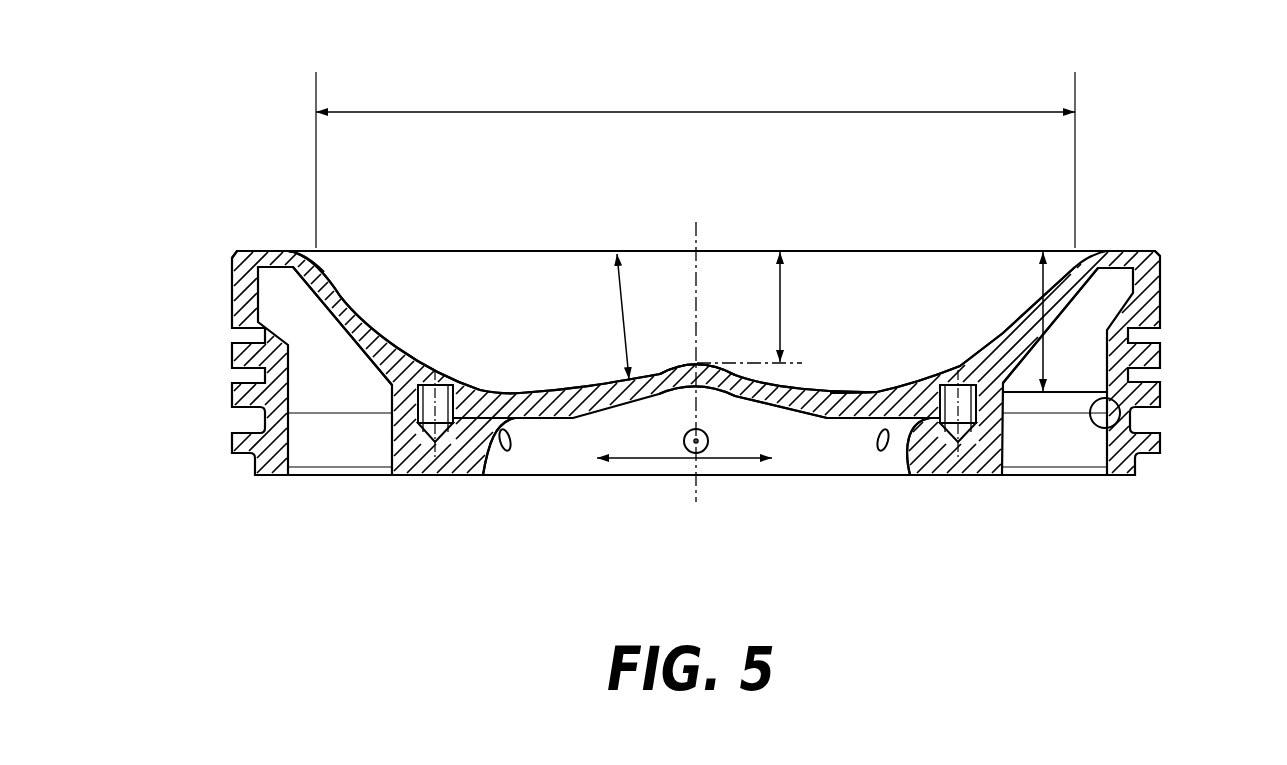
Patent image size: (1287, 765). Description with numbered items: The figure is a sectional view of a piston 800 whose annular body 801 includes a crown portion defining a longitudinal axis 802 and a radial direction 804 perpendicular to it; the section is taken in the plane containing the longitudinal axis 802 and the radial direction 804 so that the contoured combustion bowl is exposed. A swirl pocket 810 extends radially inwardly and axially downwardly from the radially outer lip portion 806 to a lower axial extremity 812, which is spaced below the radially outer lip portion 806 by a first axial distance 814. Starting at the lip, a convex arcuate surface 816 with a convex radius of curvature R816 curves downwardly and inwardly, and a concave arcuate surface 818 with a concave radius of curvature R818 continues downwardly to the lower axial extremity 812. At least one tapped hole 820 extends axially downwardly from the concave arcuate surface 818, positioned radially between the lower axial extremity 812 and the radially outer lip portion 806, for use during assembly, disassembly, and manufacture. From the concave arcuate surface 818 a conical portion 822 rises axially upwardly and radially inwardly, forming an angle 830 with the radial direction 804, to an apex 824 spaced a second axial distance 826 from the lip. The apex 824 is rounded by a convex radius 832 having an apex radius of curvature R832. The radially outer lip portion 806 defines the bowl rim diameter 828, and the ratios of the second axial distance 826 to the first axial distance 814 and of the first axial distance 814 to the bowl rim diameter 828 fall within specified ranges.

The piston 800 is at (705, 195).
The annular body 801 is at (617, 247).
The longitudinal axis 802 is at (698, 262).
The radial direction 804 is at (677, 460).
The radially outer lip portion 806 is at (253, 247).
The swirl pocket 810 is at (841, 281).
The lower axial extremity 812 is at (869, 395).
The first axial distance 814 is at (1047, 367).
The convex arcuate surface 816 is at (292, 258).
The convex radius of curvature R816 is at (298, 246).
The concave arcuate surface 818 is at (356, 334).
The concave radius of curvature R818 is at (1012, 331).
The tapped hole 820 is at (435, 413).
The conical portion 822 is at (768, 384).
The apex 824 is at (701, 361).
The second axial distance 826 is at (787, 320).
The bowl rim diameter 828 is at (800, 112).
The angle 830 is at (622, 347).
The convex radius 832 is at (747, 400).
The apex radius of curvature R832 is at (683, 370).